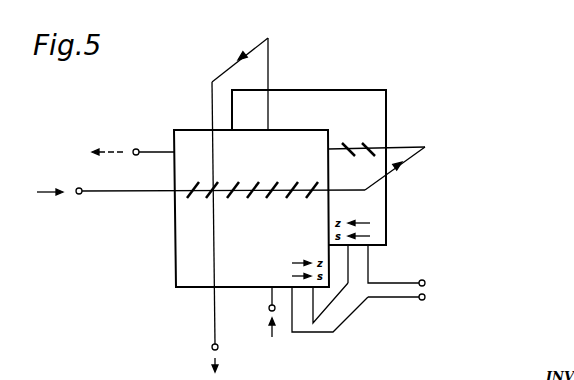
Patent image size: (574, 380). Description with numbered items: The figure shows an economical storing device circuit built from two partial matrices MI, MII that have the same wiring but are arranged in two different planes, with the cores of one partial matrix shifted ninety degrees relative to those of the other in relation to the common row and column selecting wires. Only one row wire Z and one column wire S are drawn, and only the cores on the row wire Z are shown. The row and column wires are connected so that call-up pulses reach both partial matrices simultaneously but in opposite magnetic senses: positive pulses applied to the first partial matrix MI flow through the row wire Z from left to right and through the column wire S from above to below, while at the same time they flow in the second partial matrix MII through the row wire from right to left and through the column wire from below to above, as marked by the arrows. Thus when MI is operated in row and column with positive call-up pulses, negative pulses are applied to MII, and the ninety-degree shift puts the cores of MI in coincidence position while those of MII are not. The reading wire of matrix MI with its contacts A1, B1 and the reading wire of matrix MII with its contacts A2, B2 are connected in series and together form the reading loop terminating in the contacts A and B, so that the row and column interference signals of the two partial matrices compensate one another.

The first partial matrix MI is at (192, 129).
The second partial matrix MII is at (315, 88).
The row wire Z is at (201, 199).
The column wire S is at (208, 227).
The reading loop contact A is at (402, 298).
The reading loop contact B is at (428, 284).
The reading wire contact of matrix MI A1 is at (330, 309).
The reading wire contact of matrix MI B1 is at (330, 303).
The reading wire contact of matrix MII A2 is at (357, 264).
The reading wire contact of matrix MII B2 is at (393, 264).